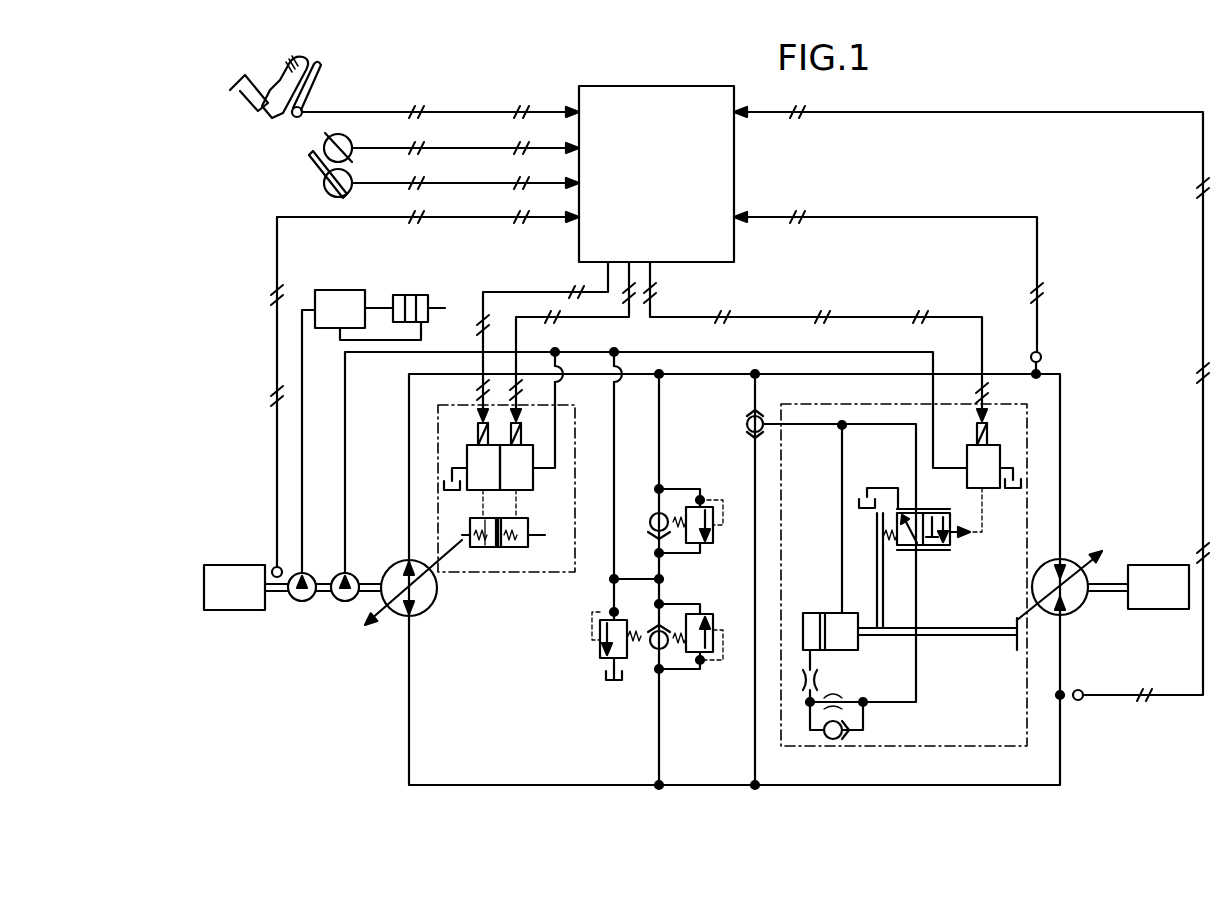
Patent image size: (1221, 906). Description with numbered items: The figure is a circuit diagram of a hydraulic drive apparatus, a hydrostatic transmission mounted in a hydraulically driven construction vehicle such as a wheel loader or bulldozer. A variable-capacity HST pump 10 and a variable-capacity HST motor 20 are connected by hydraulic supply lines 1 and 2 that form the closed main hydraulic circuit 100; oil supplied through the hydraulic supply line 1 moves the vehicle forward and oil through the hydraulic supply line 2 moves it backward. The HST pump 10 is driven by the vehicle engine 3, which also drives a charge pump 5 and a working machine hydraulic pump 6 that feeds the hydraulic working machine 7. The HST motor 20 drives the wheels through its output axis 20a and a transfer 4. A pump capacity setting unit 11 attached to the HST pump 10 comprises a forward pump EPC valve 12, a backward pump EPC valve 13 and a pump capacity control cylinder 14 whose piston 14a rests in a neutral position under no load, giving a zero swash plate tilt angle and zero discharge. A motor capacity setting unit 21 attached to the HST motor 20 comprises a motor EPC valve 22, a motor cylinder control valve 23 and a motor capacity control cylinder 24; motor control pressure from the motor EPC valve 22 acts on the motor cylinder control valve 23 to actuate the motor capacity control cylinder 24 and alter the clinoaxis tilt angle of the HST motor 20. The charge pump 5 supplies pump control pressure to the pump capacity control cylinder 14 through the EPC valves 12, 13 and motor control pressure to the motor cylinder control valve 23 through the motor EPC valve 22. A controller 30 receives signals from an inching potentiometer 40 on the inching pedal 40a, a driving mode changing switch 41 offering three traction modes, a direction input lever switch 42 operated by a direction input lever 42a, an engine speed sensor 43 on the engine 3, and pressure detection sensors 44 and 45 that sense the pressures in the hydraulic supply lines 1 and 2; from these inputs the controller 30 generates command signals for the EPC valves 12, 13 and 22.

The hydraulic supply line 1 is at (683, 376).
The hydraulic supply line 2 is at (472, 785).
The engine 3 is at (234, 610).
The transfer 4 is at (1168, 565).
The charge pump 5 is at (345, 601).
The working machine hydraulic pump 6 is at (301, 601).
The hydraulic working machine 7 is at (405, 295).
The hydro-static transmission pump 10 is at (431, 606).
The pump capacity setting unit 11 is at (506, 486).
The forward pump electromagnetic proportion control valve 12 is at (534, 490).
The backward pump electromagnetic proportion control valve 13 is at (470, 490).
The pump capacity control cylinder 14 is at (528, 547).
The piston 14a is at (487, 548).
The hydro-static transmission motor 20 is at (1078, 609).
The output axis 20a is at (1118, 592).
The motor capacity setting unit 21 is at (904, 592).
The motor electromagnetic proportion control valve 22 is at (990, 489).
The motor cylinder control valve 23 is at (946, 560).
The motor capacity control cylinder 24 is at (814, 591).
The controller 30 is at (621, 86).
The inching potentiometer 40 is at (305, 107).
The inching pedal 40a is at (320, 67).
The driving mode changing switch 41 is at (325, 143).
The direction input lever switch 42 is at (321, 192).
The direction input lever 42a is at (310, 157).
The engine speed sensor 43 is at (274, 567).
The pressure detection sensor 44 is at (1038, 352).
The pressure detection sensor 45 is at (1081, 700).
The main hydraulic circuit 100 is at (966, 818).